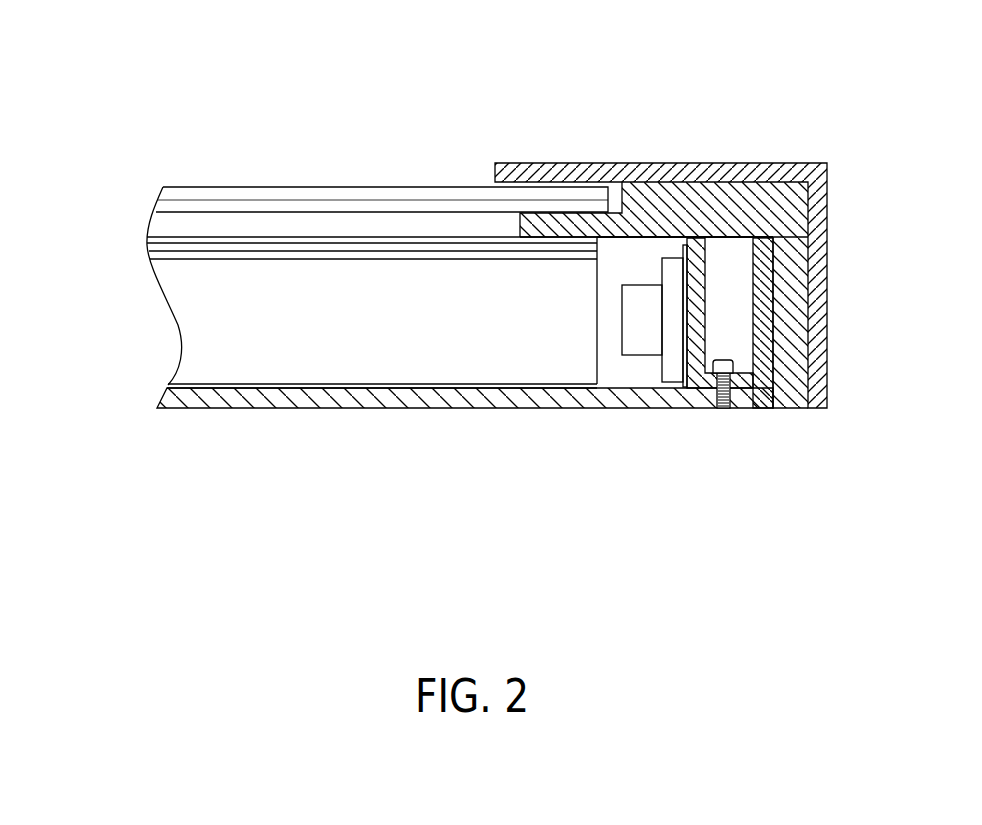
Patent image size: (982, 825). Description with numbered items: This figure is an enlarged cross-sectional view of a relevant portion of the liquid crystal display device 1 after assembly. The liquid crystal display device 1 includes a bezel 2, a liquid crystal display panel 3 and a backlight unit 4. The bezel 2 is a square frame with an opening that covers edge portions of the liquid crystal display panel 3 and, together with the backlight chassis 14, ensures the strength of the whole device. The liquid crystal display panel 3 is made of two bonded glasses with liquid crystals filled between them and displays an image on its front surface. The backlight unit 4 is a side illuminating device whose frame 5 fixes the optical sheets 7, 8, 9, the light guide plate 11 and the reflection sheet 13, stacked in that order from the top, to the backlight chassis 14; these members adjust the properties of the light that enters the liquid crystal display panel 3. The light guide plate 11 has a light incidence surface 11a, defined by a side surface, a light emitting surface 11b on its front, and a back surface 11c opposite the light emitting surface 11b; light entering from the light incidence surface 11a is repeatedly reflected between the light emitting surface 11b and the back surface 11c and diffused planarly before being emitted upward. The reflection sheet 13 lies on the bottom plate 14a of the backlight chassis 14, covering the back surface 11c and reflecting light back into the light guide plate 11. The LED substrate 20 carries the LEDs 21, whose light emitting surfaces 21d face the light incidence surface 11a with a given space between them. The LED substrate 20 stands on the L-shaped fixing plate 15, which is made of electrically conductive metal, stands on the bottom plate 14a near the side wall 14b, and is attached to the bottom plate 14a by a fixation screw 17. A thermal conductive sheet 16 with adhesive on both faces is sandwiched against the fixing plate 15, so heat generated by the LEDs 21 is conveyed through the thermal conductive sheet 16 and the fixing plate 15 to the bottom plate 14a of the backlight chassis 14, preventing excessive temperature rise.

The liquid crystal display device 1 is at (172, 85).
The bezel 2 is at (676, 163).
The liquid crystal display panel 3 is at (318, 187).
The backlight unit 4 is at (361, 422).
The frame 5 is at (767, 213).
The optical sheet 7 is at (175, 240).
The optical sheet 8 is at (163, 248).
The optical sheet 9 is at (160, 257).
The light guide plate 11 is at (190, 327).
The light incidence surface 11a is at (598, 338).
The light emitting surface 11b is at (364, 250).
The back surface 11c is at (455, 395).
The reflection sheet 13 is at (187, 386).
The backlight chassis 14 is at (262, 398).
The bottom plate 14a is at (402, 398).
The side wall 14b is at (762, 277).
The fixing plate 15 is at (697, 317).
The thermal conductive sheet 16 is at (689, 362).
The fixation screw 17 is at (733, 367).
The LED substrate 20 is at (684, 368).
The LED 21 is at (637, 355).
The light emitting surface 21d is at (622, 333).